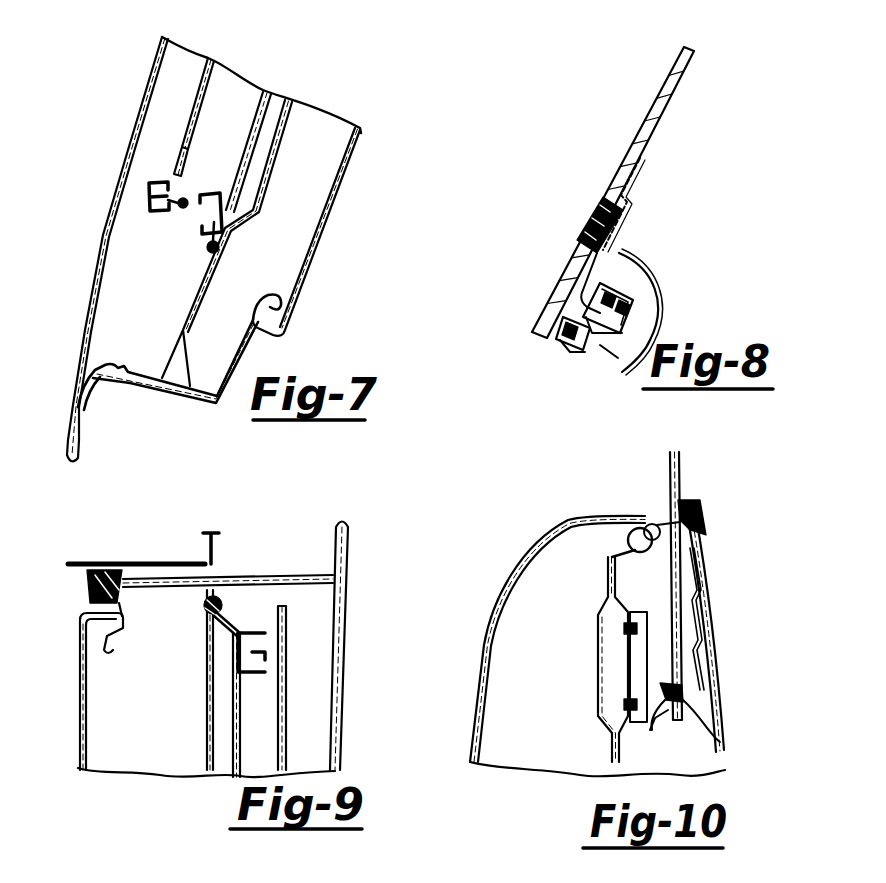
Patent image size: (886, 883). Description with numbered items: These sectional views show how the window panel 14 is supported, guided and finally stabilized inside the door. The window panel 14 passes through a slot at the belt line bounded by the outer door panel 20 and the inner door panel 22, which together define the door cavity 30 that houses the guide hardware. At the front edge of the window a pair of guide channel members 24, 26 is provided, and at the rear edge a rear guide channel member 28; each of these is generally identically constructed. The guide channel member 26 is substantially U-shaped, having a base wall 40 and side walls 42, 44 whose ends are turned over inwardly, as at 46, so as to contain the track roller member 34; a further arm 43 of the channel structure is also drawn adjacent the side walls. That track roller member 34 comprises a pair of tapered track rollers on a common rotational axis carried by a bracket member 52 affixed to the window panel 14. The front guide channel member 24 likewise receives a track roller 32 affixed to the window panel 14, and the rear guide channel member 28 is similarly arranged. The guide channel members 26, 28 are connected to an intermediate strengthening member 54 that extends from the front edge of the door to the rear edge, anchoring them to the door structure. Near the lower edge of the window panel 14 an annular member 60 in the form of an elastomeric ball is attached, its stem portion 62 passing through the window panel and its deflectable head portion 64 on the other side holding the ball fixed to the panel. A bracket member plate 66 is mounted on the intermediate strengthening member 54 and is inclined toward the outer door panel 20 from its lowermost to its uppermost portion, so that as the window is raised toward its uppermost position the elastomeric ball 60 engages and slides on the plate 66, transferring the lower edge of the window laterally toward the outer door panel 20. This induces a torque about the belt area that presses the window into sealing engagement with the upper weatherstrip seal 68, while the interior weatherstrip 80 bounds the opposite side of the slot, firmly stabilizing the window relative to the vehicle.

In FIG. 7, the window panel 14 is at (207, 83).
In FIG. 8, the window panel 14 is at (657, 118).
In FIG. 9, the window panel 14 is at (283, 695).
In FIG. 10, the window panel 14 is at (680, 472).
In FIG. 7, the outer door panel 20 is at (138, 126).
In FIG. 9, the outer door panel 20 is at (347, 617).
In FIG. 10, the outer door panel 20 is at (723, 657).
In FIG. 7, the inner door panel 22 is at (340, 207).
In FIG. 9, the inner door panel 22 is at (78, 686).
In FIG. 10, the inner door panel 22 is at (520, 557).
In FIG. 7, the guide channel member 24 is at (149, 194).
In FIG. 7, the guide channel member 26 is at (199, 228).
In FIG. 8, the guide channel member 26 is at (640, 303).
In FIG. 9, the rear guide channel member 28 is at (243, 635).
In FIG. 9, the door cavity 30 is at (108, 726).
In FIG. 7, the track roller 32 is at (152, 212).
In FIG. 8, the track roller member 34 is at (650, 317).
In FIG. 8, the base wall 40 is at (617, 360).
In FIG. 8, the side wall 42 is at (573, 347).
In FIG. 8, the arm 43 is at (613, 270).
In FIG. 8, the side wall 44 is at (640, 293).
In FIG. 8, the turned-over end 46 is at (570, 313).
In FIG. 8, the bracket member 52 is at (620, 223).
In FIG. 7, the intermediate strengthening member 54 is at (278, 157).
In FIG. 9, the intermediate strengthening member 54 is at (204, 667).
In FIG. 10, the intermediate strengthening member 54 is at (600, 648).
In FIG. 10, the annular member 60 is at (670, 745).
In FIG. 10, the stem portion 62 is at (683, 691).
In FIG. 10, the deflectable head portion 64 is at (685, 725).
In FIG. 10, the bracket member plate 66 is at (650, 730).
In FIG. 10, the upper weatherstrip seal 68 is at (690, 520).
In FIG. 10, the interior weatherstrip 80 is at (665, 522).